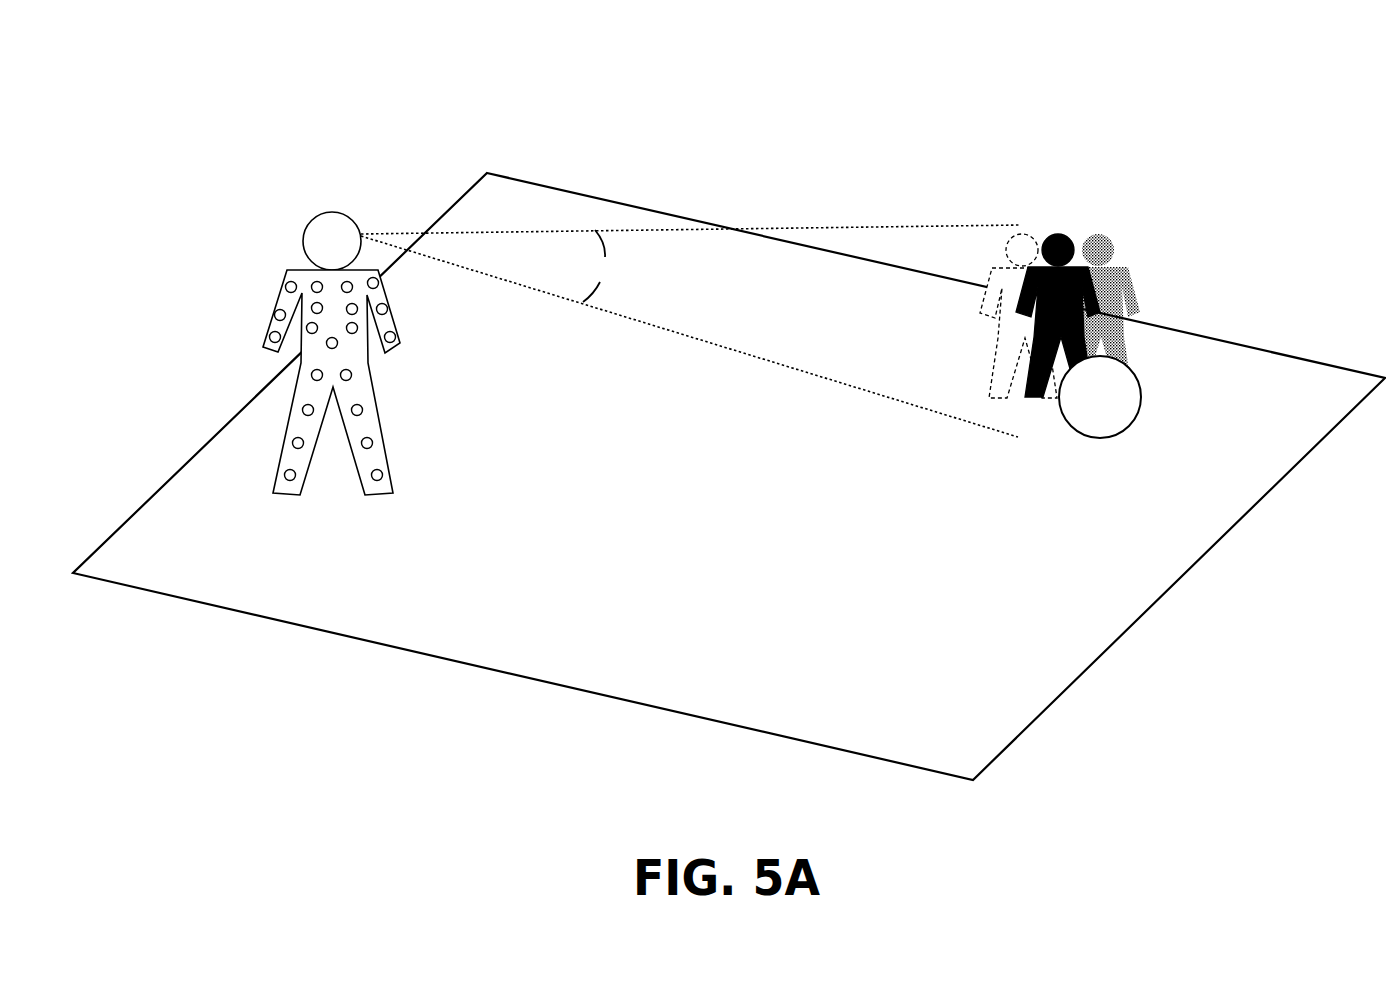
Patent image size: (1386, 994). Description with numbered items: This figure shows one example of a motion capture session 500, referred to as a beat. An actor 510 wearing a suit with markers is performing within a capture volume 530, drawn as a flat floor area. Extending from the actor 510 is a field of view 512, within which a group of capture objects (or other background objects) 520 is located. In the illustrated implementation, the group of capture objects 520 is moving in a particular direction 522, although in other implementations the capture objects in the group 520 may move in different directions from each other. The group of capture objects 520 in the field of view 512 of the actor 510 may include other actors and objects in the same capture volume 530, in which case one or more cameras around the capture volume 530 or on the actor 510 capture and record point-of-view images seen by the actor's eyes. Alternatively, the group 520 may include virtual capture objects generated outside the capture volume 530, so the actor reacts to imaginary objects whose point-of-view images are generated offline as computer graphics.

The motion capture session 500 is at (745, 81).
The actor 510 is at (267, 239).
The field of view 512 is at (690, 331).
The group of capture objects 520 is at (1196, 204).
The particular direction 522 is at (1057, 458).
The capture volume 530 is at (750, 628).